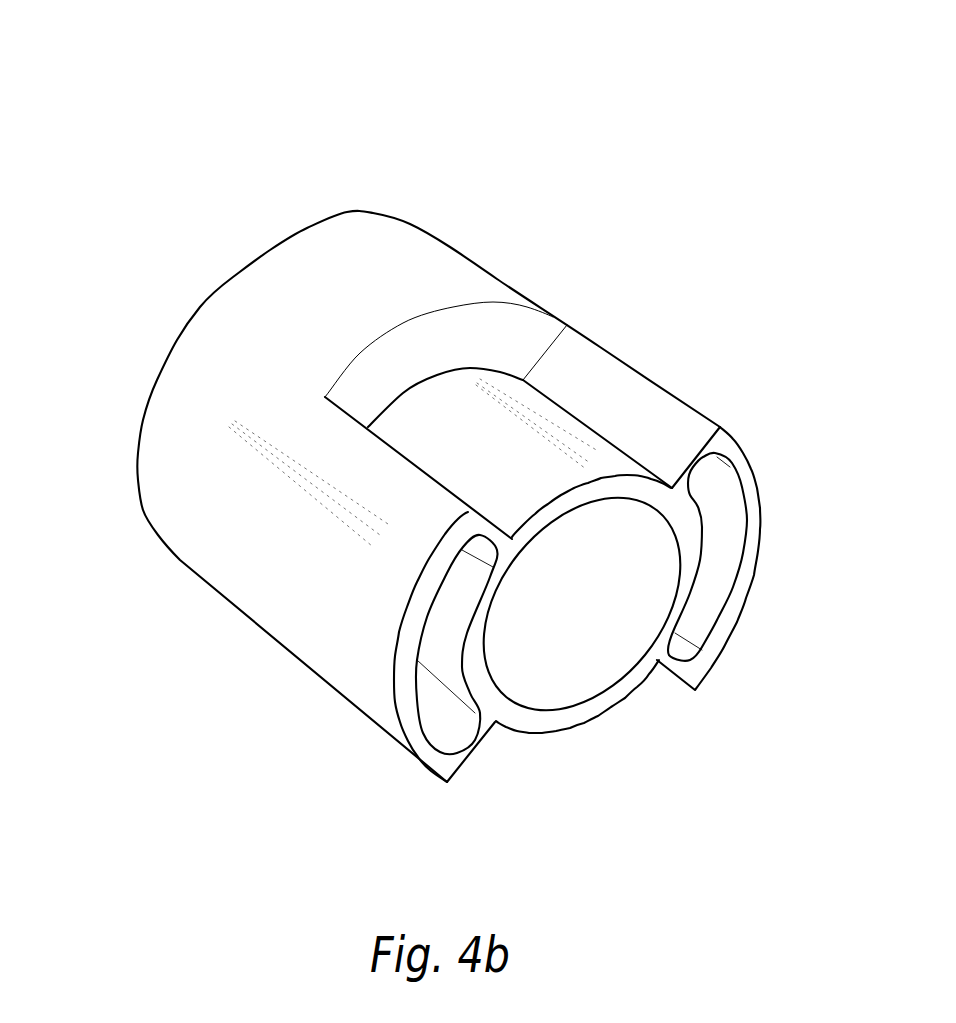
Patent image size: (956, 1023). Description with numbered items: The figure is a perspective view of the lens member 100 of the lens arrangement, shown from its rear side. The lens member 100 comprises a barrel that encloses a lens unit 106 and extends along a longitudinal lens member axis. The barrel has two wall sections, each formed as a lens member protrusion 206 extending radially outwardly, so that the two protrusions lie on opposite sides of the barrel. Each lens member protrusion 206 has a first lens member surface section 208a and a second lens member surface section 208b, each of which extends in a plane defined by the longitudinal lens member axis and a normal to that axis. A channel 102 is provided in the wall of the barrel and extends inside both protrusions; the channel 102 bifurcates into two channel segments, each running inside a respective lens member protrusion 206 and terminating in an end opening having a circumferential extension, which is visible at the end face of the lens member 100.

The lens member 100 is at (252, 95).
The channel 102 is at (713, 583).
The lens unit 106 is at (220, 470).
The lens member protrusion 206 is at (668, 387).
The first lens member surface section 208a is at (588, 390).
The second lens member surface section 208b is at (408, 460).